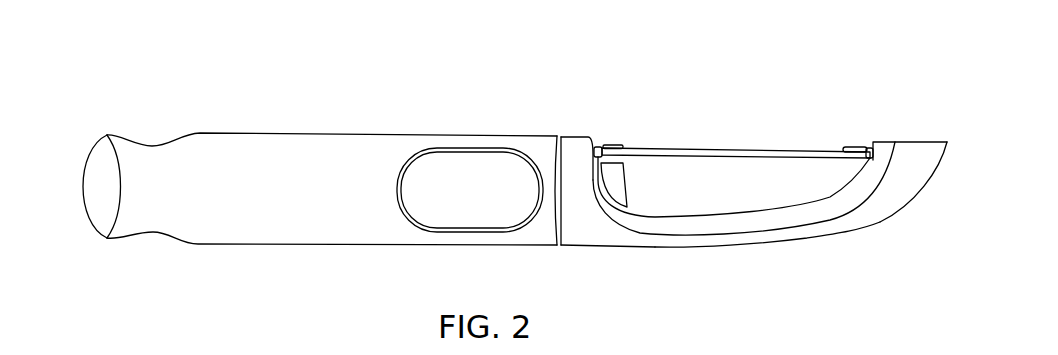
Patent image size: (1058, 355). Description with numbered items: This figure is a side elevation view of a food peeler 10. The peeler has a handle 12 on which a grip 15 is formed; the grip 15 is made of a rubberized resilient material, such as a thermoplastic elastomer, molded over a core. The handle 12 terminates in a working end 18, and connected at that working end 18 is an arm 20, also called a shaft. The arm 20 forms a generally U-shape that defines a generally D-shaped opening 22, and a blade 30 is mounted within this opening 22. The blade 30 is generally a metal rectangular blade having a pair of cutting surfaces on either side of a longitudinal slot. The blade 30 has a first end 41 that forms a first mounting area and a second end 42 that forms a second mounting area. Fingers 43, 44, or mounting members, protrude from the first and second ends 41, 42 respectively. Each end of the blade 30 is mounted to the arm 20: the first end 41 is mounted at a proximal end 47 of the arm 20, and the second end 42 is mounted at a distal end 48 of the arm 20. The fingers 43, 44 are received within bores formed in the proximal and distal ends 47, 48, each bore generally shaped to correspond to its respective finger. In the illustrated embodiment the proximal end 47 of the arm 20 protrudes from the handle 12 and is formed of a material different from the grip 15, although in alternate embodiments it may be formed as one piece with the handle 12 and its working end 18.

The food peeler 10 is at (788, 66).
The handle 12 is at (273, 240).
The grip 15 is at (270, 137).
The working end 18 is at (563, 228).
The arm 20 is at (693, 247).
The D-shaped opening 22 is at (866, 178).
The blade 30 is at (743, 150).
The first end 41 is at (614, 147).
The second end 42 is at (852, 147).
The finger 43 is at (596, 146).
The finger 44 is at (874, 150).
The proximal end 47 is at (577, 157).
The distal end 48 is at (908, 187).